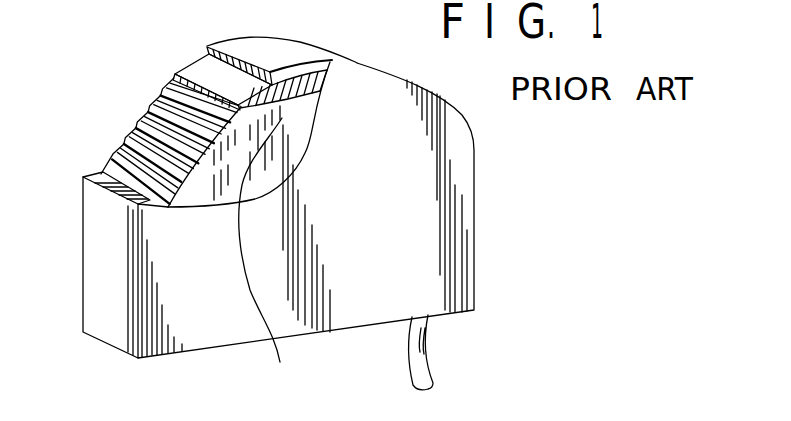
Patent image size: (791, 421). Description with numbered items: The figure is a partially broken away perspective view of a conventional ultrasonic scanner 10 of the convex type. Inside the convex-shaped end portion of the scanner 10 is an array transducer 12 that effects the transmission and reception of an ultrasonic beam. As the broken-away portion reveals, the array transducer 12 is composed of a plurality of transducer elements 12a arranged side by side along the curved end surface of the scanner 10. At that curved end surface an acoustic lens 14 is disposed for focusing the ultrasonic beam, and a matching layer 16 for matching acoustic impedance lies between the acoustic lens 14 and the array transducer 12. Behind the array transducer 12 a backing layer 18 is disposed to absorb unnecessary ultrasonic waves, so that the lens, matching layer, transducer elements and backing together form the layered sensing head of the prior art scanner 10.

The ultrasonic scanner 10 is at (496, 189).
The array transducer 12 is at (147, 96).
The transducer elements 12a is at (132, 126).
The acoustic lens 14 is at (293, 52).
The matching layer 16 is at (200, 73).
The backing layer 18 is at (265, 258).